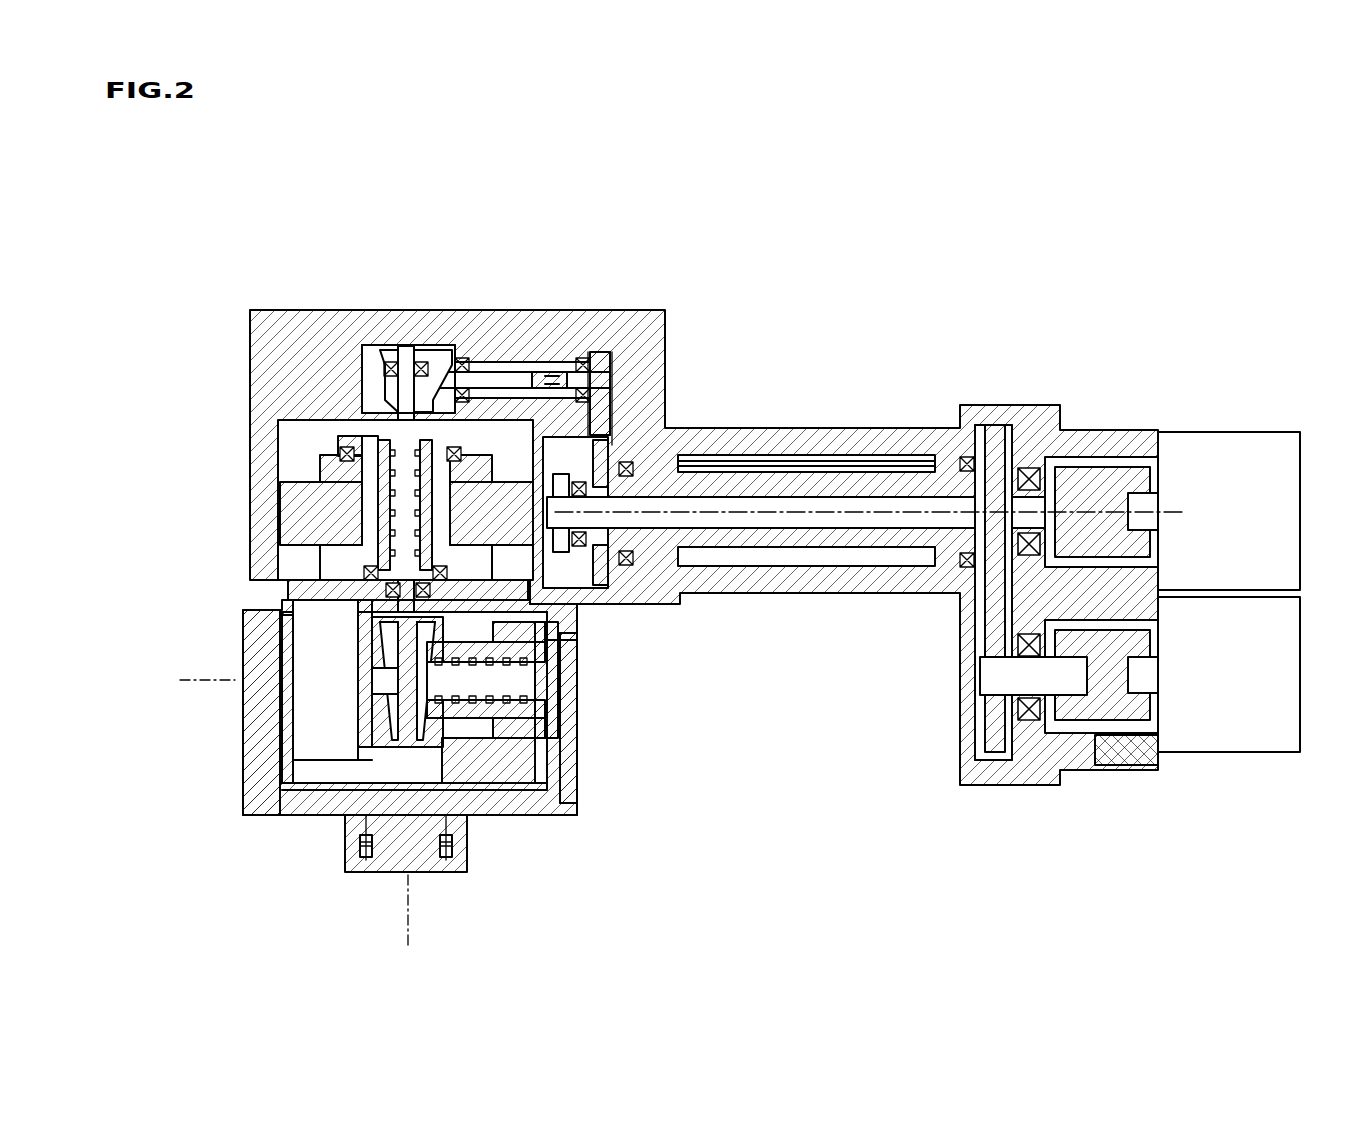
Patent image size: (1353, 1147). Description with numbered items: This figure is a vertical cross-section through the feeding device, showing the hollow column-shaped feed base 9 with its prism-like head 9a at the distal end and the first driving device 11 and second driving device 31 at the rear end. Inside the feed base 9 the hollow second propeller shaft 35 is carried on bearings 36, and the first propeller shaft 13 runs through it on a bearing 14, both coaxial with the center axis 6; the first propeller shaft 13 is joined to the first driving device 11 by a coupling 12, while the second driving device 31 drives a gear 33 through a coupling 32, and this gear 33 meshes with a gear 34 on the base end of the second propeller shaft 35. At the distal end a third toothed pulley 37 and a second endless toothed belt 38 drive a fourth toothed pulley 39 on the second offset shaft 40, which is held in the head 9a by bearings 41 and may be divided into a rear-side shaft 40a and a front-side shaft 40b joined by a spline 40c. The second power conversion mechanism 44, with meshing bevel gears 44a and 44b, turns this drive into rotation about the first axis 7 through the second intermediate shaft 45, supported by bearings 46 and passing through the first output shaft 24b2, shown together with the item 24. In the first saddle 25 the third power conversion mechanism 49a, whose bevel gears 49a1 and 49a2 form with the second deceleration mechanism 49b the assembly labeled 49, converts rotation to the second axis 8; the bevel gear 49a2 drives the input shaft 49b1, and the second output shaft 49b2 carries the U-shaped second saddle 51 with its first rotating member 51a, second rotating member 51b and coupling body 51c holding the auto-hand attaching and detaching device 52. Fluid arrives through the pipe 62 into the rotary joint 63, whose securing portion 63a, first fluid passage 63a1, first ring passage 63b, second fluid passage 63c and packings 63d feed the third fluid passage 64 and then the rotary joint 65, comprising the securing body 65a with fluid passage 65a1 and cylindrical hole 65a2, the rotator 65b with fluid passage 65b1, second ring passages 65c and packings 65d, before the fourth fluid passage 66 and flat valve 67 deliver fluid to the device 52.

The head 9a is at (278, 310).
The feed base 9 is at (760, 428).
The second power conversion mechanism 44 is at (442, 250).
The bevel gear 44a is at (430, 346).
The bevel gear 44b is at (372, 350).
The bearings 46 is at (384, 369).
The second intermediate shaft 45 is at (362, 385).
The bearings 41 is at (462, 358).
The second offset shaft 40 is at (581, 200).
The rear-side shaft 40a is at (576, 372).
The front-side shaft 40b is at (502, 372).
The spline 40c is at (548, 372).
The fourth toothed pulley 39 is at (602, 370).
The second endless toothed belt 38 is at (625, 432).
The third toothed pulley 37 is at (606, 462).
The bearings 36 is at (630, 462).
The pipe 62 is at (832, 455).
The second propeller shaft 35 is at (838, 566).
The first propeller shaft 13 is at (935, 497).
The center axis 6 is at (1185, 512).
The gear 33 is at (985, 710).
The gear 34 is at (1000, 572).
The coupling 12 is at (1090, 430).
The bearing 14 is at (1030, 468).
The coupling 32 is at (1100, 735).
The first driving device 11 is at (1232, 432).
The second driving device 31 is at (1232, 752).
The rotary joint 63 is at (183, 410).
The securing portion 63a is at (370, 452).
The first fluid passage 63a1 is at (425, 420).
The first ring passage 63b is at (378, 517).
The second fluid passage 63c is at (362, 533).
The packings 63d is at (377, 492).
The first output shaft 24b2 is at (370, 453).
The frame 24 is at (292, 552).
The first saddle 25 is at (290, 596).
The second saddle 51 is at (215, 950).
The first rotating member 51a is at (243, 725).
The second rotating member 51b is at (577, 800).
The coupling body 51c is at (545, 815).
The motor 49 is at (327, 691).
The third power conversion mechanism 49a is at (372, 680).
The bevel gear 49a1 is at (382, 622).
The bevel gear 49a2 is at (385, 650).
The second deceleration mechanism 49b is at (340, 880).
The input shaft 49b1 is at (362, 760).
The second output shaft 49b2 is at (283, 745).
The rotary joint 65 is at (680, 642).
The securing body 65a is at (548, 650).
The fluid passage 65a1 is at (510, 632).
The cylindrical hole 65a2 is at (543, 694).
The rotator 65b is at (520, 700).
The fluid passage 65b1 is at (553, 660).
The second ring passages 65c is at (547, 703).
The packings 65d is at (553, 703).
The third fluid passage 64 is at (540, 608).
The fourth fluid passage 66 is at (577, 792).
The auto-hand attaching and detaching device 52 is at (450, 872).
The flat valve 67 is at (452, 842).
The first axis 7 is at (407, 915).
The second axis 8 is at (195, 680).